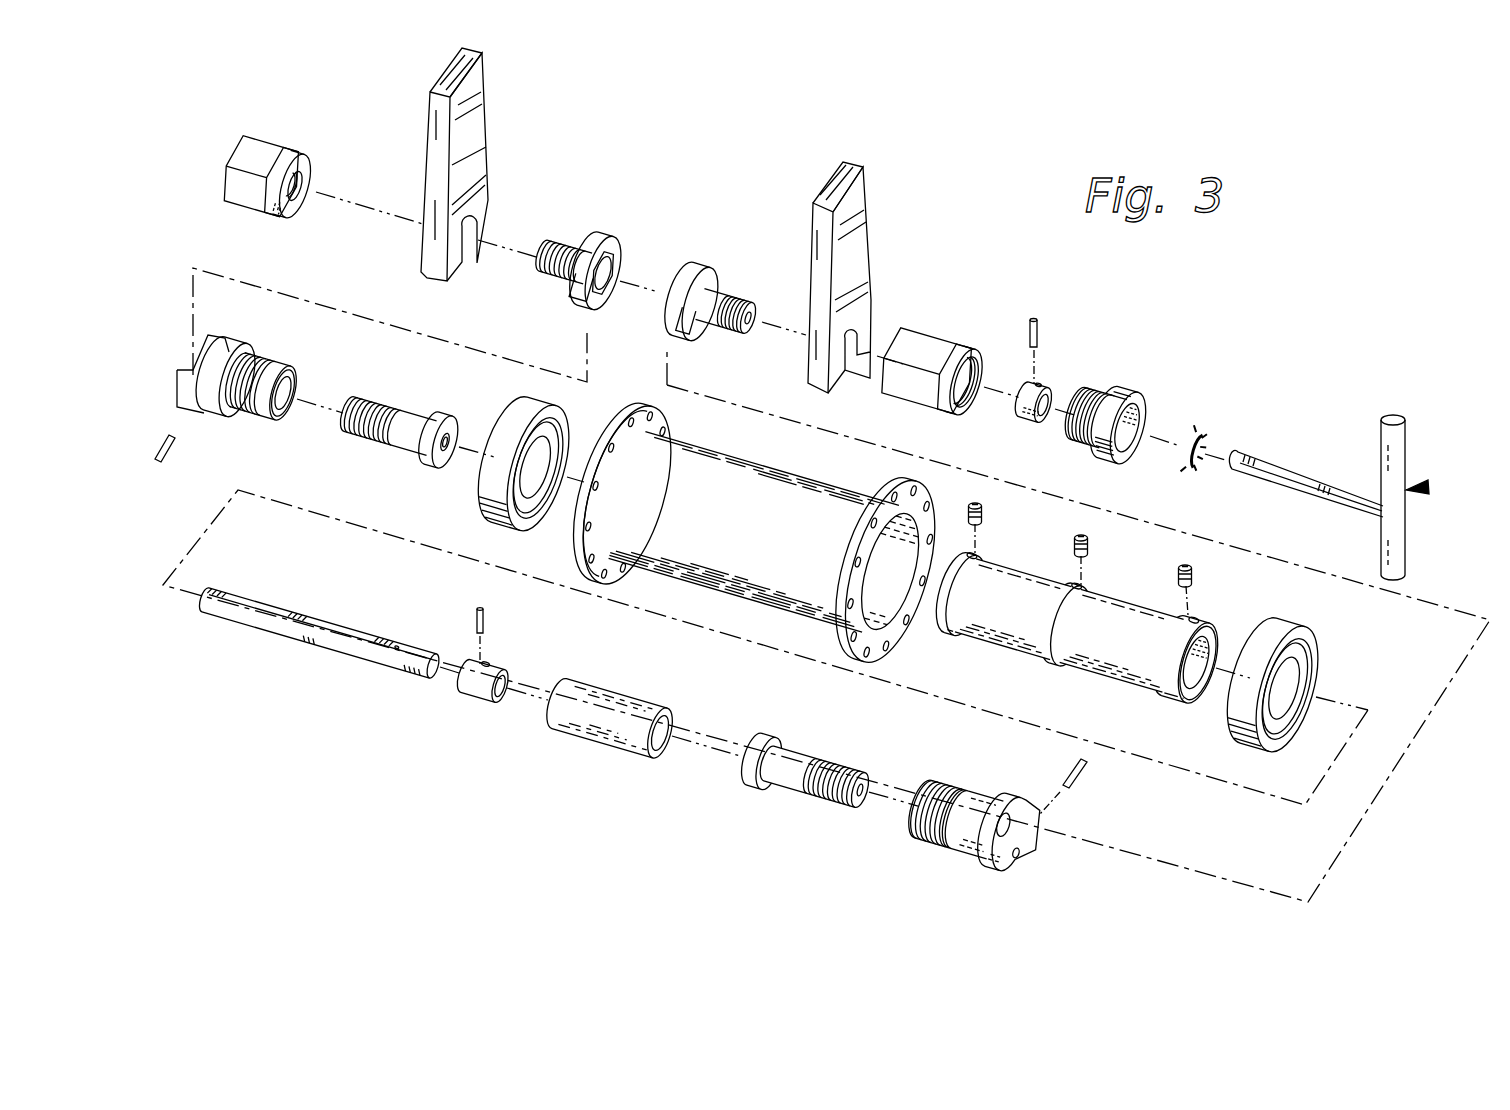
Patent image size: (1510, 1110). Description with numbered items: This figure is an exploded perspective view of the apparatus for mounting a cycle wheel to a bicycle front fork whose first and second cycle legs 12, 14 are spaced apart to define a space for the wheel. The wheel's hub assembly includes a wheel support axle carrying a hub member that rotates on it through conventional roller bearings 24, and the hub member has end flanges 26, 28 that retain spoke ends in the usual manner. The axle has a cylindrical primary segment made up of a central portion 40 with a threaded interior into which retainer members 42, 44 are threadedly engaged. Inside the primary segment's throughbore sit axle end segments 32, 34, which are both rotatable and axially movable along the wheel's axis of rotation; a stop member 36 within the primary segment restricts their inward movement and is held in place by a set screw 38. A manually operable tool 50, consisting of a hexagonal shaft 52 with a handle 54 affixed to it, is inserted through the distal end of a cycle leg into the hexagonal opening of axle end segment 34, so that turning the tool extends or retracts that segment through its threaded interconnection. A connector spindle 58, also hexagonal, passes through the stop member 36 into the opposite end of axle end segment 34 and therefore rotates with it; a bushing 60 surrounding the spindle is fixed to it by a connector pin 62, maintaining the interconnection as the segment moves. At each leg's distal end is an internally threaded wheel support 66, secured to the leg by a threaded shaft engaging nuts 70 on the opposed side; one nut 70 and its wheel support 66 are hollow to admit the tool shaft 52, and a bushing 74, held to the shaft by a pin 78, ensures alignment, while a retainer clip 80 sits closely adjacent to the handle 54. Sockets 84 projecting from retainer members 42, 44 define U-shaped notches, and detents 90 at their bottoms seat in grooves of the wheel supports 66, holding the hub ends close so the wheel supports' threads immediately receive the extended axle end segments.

The first cycle leg 12 is at (478, 135).
The second cycle leg 14 is at (858, 228).
The roller bearings 24 is at (522, 420).
The end flange 26 is at (625, 420).
The end flange 28 is at (907, 482).
The axle end segment 32 is at (418, 450).
The axle end segment 34 is at (770, 788).
The stop member 36 is at (600, 745).
The set screw 38 is at (1185, 568).
The central portion 40 is at (1025, 640).
The retainer member 42 is at (237, 405).
The retainer member 44 is at (965, 852).
The manually operable tool 50 is at (1426, 486).
The tool shaft 52 is at (1280, 450).
The handle 54 is at (1400, 450).
The connector spindle 58 is at (325, 650).
The bushing 60 is at (485, 700).
The connector pin 62 is at (490, 622).
The wheel support 66 is at (590, 245).
The nut 70 is at (268, 155).
The bushing 74 is at (1050, 385).
The pin 78 is at (1040, 335).
The retainer clip 80 is at (1198, 430).
The socket 84 is at (195, 370).
The detent 90 is at (172, 450).